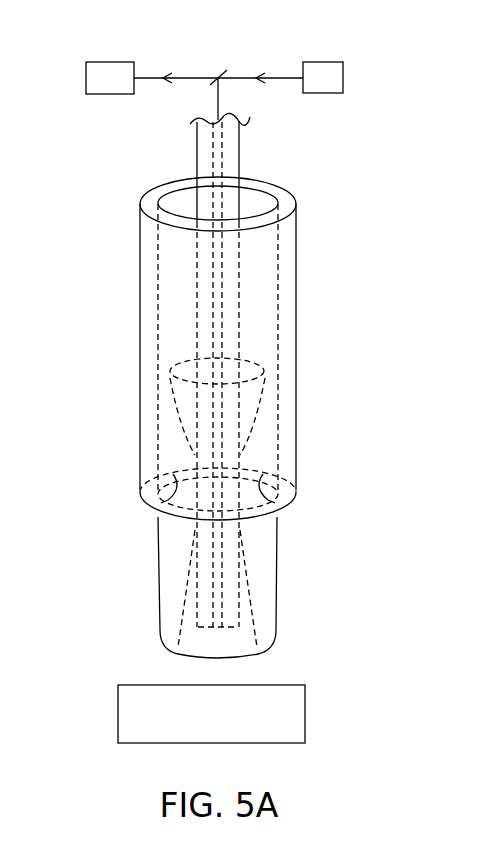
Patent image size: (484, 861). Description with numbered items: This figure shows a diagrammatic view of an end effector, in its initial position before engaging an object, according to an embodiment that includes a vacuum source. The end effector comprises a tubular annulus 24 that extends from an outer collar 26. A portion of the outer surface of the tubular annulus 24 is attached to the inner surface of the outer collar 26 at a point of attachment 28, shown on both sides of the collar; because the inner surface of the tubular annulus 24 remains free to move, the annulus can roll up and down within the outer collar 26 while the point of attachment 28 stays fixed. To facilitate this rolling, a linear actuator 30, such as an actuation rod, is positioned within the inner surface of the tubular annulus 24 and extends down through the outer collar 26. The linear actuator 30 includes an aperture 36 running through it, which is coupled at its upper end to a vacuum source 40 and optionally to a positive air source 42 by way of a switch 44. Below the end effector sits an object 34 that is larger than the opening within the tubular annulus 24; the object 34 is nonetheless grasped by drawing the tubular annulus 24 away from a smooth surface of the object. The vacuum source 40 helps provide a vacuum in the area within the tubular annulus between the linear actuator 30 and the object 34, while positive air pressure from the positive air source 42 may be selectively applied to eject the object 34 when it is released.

The tubular annulus 24 is at (277, 568).
The outer collar 26 is at (297, 264).
The point of attachment 28 is at (173, 474).
The linear actuator 30 is at (239, 155).
The object 34 is at (223, 724).
The aperture 36 is at (222, 117).
The vacuum source 40 is at (86, 78).
The positive air source 42 is at (343, 78).
The switch 44 is at (218, 76).